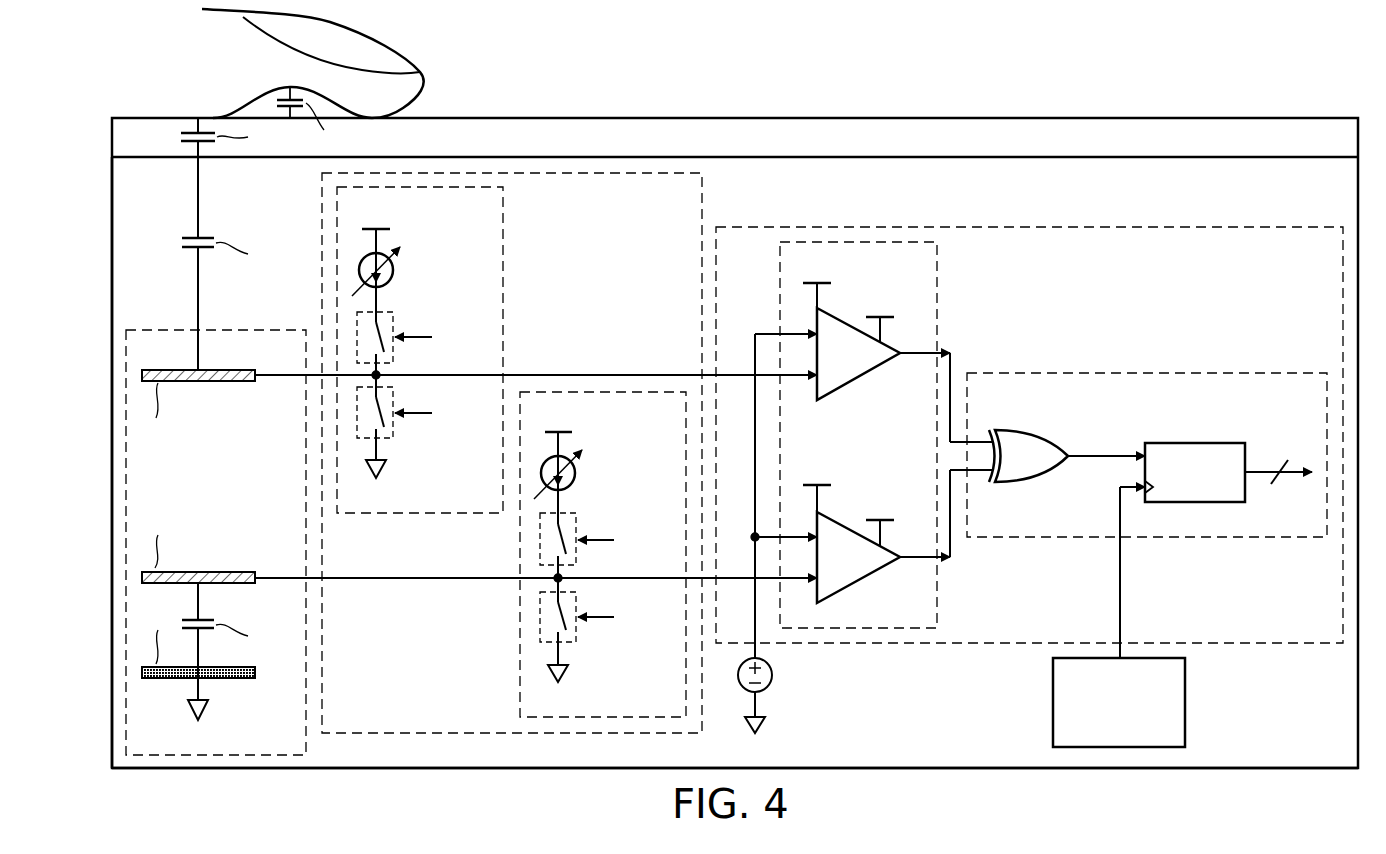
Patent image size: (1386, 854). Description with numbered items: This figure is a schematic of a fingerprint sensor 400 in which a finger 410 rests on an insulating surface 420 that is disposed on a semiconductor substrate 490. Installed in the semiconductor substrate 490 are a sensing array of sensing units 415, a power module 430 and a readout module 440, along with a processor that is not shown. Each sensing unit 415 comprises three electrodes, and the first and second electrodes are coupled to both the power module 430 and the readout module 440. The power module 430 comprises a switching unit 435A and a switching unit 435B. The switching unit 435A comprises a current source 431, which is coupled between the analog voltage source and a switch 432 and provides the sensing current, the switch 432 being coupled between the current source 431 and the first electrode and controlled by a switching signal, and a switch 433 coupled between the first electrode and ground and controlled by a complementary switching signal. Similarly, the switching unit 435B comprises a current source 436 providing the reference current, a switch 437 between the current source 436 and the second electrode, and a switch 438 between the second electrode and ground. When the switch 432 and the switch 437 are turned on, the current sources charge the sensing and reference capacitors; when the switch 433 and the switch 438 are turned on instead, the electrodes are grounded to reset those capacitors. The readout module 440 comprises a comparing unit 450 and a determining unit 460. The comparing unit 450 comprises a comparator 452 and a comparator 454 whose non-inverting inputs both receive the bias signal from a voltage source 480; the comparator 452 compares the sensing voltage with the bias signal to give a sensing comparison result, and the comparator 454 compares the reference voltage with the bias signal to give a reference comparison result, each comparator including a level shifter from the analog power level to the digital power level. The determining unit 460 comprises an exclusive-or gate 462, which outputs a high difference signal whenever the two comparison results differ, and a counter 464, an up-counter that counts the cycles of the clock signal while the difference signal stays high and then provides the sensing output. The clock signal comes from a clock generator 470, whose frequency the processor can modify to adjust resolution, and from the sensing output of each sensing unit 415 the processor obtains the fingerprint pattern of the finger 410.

The fingerprint sensor 400 is at (732, 100).
The finger 410 is at (421, 56).
The sensing unit 415 is at (155, 328).
The insulating surface 420 is at (165, 150).
The power module 430 is at (704, 196).
The current source 431 is at (394, 268).
The switch 432 is at (394, 347).
The switch 433 is at (394, 423).
The switching unit 435A is at (468, 350).
The switching unit 435B is at (552, 554).
The current source 436 is at (576, 471).
The switch 437 is at (577, 550).
The switch 438 is at (577, 628).
The readout module 440 is at (1028, 226).
The comparing unit 450 is at (899, 435).
The comparator 452 is at (862, 380).
The comparator 454 is at (862, 583).
The determining unit 460 is at (1147, 424).
The XOR gate 462 is at (1037, 477).
The counter 464 is at (1194, 442).
The clock generator 470 is at (1186, 702).
The voltage source 480 is at (773, 672).
The semiconductor substrate 490 is at (166, 193).